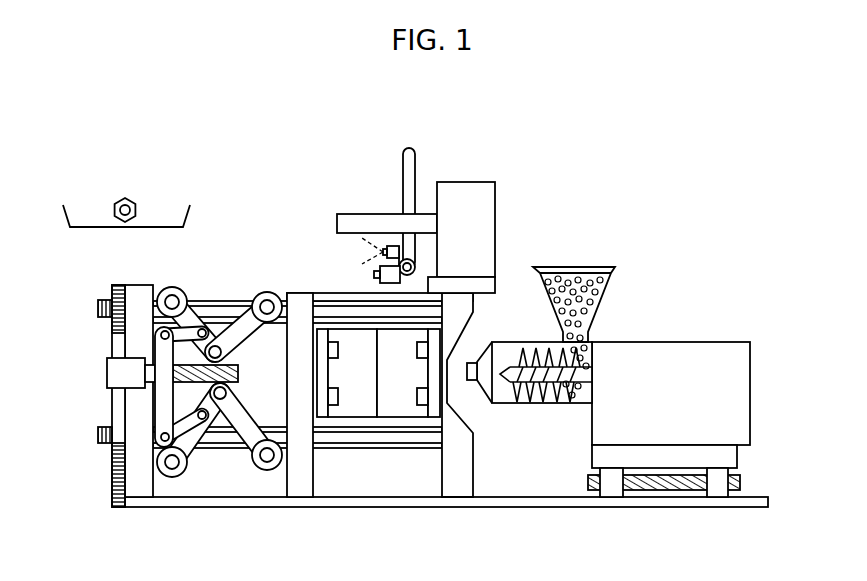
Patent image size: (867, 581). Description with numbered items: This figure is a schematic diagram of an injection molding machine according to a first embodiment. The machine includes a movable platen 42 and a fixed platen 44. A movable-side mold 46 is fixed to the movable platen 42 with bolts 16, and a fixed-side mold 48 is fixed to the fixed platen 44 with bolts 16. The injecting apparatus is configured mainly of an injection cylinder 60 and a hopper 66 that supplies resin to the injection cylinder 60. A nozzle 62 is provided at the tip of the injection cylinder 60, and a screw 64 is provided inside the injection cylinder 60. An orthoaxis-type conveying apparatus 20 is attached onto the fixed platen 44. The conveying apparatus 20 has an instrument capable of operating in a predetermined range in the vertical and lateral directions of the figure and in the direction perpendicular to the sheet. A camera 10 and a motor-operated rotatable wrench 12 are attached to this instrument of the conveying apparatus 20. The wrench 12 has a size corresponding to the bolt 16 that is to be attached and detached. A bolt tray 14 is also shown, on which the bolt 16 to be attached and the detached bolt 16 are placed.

The camera 10 is at (383, 247).
The motor-operated rotatable wrench 12 is at (374, 275).
The bolt tray 14 is at (78, 230).
The bolt 16 is at (338, 352).
The orthoaxis-type conveying apparatus 20 is at (467, 182).
The movable platen 42 is at (297, 485).
The fixed platen 44 is at (463, 485).
The movable-side mold 46 is at (337, 417).
The fixed-side mold 48 is at (418, 417).
The injection cylinder 60 is at (543, 403).
The nozzle 62 is at (470, 380).
The screw 64 is at (573, 397).
The hopper 66 is at (577, 267).